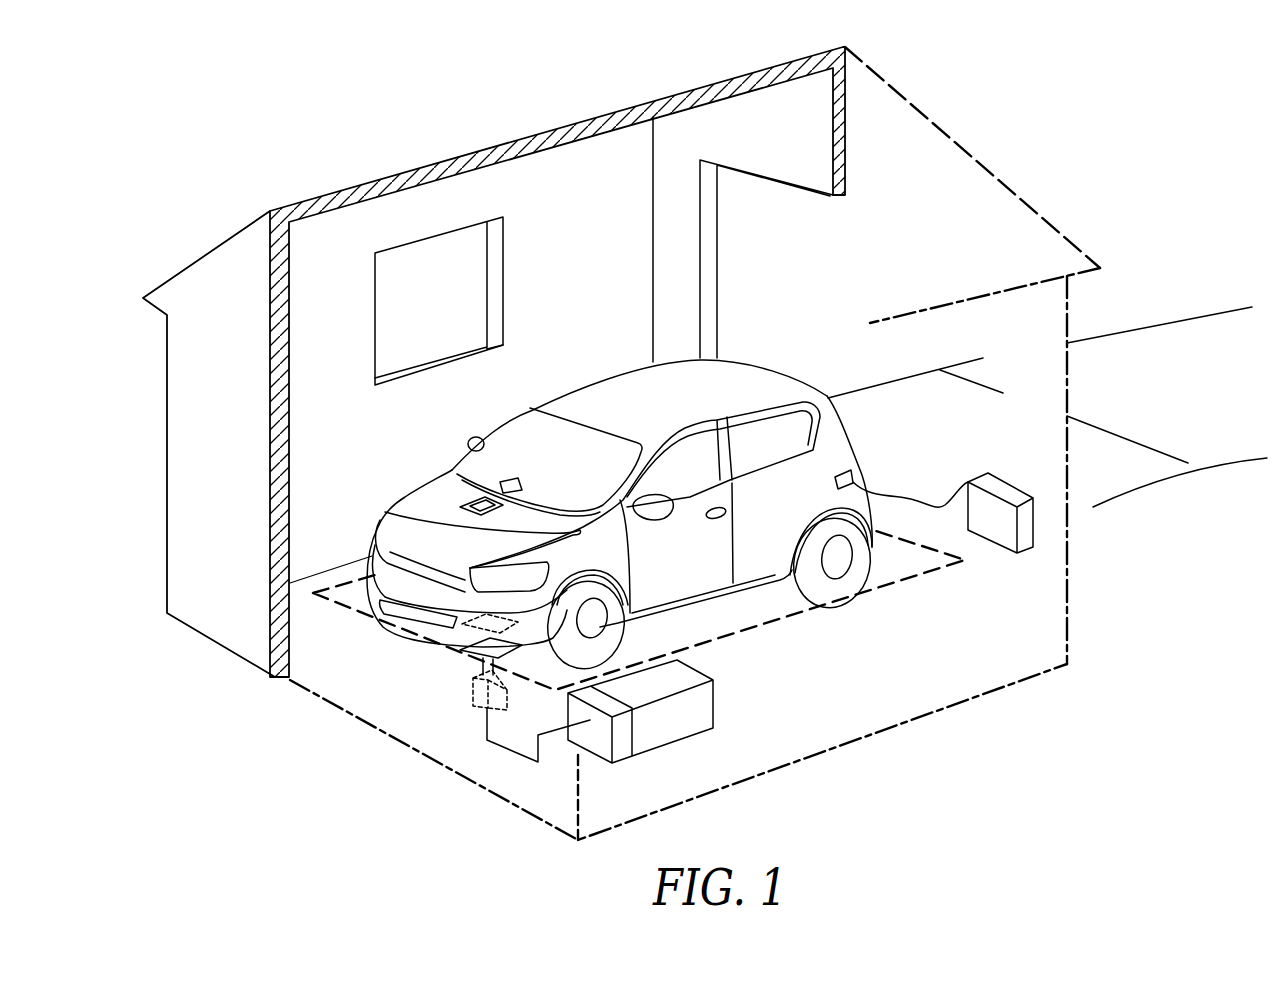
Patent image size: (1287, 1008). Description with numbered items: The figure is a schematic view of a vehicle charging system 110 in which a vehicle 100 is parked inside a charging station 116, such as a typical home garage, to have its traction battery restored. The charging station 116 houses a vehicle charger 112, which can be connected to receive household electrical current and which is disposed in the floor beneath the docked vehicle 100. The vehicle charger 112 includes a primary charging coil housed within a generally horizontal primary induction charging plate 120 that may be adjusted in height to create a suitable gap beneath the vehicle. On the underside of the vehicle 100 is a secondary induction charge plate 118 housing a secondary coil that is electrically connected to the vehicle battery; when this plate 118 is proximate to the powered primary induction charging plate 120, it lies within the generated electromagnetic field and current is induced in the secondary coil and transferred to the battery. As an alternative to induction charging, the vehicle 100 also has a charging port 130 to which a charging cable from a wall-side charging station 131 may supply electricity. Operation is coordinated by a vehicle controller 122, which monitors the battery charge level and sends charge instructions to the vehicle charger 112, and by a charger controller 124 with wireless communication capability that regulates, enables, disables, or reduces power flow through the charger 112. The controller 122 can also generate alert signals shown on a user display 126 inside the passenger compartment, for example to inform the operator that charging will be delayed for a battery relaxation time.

The vehicle 100 is at (737, 362).
The vehicle charging system 110 is at (447, 440).
The vehicle charger 112 is at (717, 703).
The charging station 116 is at (908, 692).
The induction charge plate 118 is at (473, 625).
The primary induction charging plate 120 is at (477, 657).
The controller 122 is at (460, 505).
The charger controller 124 is at (483, 702).
The user display 126 is at (510, 480).
The charging port 130 is at (847, 475).
The charging station 131 is at (1013, 483).